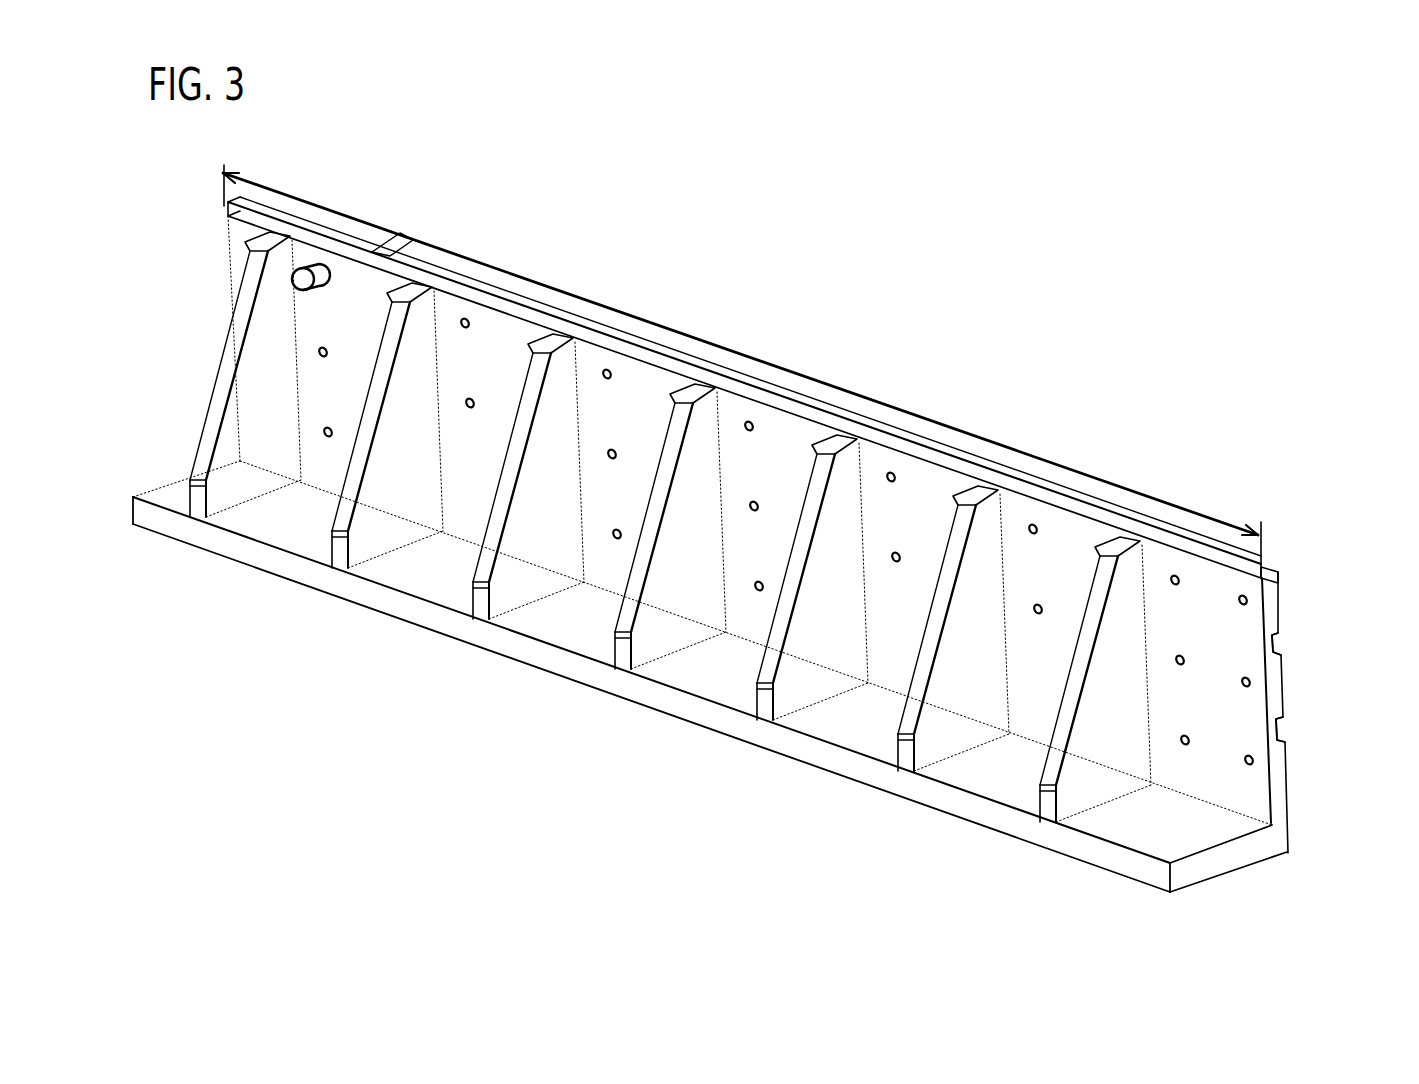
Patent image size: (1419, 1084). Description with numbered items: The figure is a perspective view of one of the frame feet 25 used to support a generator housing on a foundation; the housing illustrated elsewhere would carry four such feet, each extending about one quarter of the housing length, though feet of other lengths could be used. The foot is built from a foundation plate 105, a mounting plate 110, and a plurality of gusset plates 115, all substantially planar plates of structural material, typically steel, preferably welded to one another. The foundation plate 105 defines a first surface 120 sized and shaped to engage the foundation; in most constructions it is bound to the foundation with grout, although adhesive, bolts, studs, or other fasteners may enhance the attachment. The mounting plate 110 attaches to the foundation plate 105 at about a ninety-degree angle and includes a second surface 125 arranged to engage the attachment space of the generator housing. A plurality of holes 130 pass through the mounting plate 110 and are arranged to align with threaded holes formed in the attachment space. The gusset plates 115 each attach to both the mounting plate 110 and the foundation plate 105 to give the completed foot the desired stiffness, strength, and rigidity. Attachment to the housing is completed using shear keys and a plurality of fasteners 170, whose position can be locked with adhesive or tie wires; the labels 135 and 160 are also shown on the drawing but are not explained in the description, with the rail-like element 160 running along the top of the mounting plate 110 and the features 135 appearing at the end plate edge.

The frame feet 25 is at (1067, 350).
The foundation plate 105 is at (1188, 828).
The mounting plate 110 is at (1252, 778).
The gusset plates 115 is at (230, 467).
The first surface 120 is at (470, 645).
The second surface 125 is at (1280, 606).
The holes 130 is at (473, 483).
The slots 135 is at (1272, 648).
The top rail 160 is at (457, 252).
The fasteners 170 is at (310, 268).